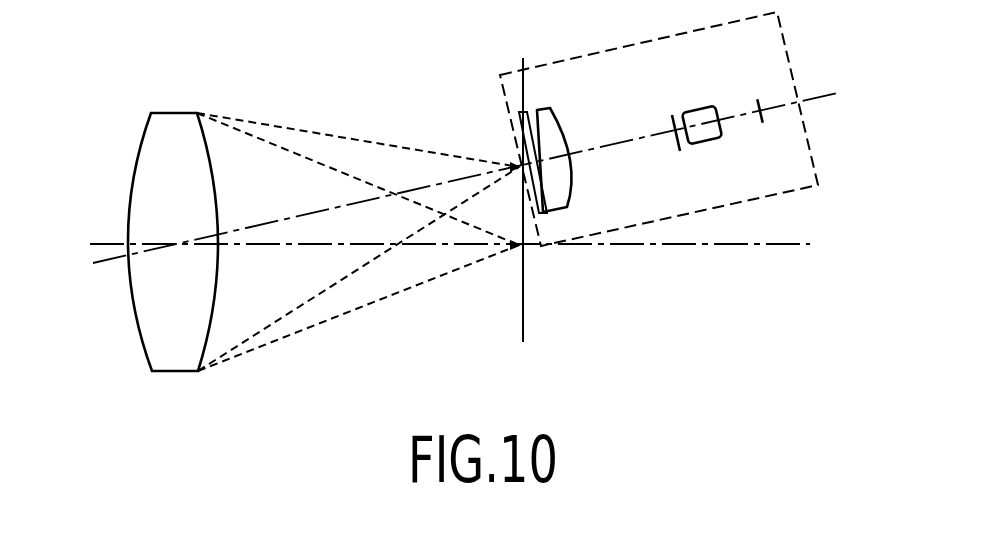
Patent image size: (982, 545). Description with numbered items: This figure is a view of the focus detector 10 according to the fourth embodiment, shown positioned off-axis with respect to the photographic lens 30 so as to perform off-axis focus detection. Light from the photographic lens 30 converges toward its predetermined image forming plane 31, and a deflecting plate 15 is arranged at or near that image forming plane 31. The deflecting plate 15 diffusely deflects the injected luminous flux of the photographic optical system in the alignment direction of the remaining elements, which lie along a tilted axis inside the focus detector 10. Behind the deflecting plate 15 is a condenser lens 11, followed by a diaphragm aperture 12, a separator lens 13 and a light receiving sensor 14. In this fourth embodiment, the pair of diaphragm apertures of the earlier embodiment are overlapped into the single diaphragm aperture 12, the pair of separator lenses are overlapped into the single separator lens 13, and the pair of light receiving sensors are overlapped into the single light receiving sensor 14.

The focus detector 10 is at (783, 192).
The condenser lens 11 is at (555, 110).
The diaphragm aperture 12 is at (680, 151).
The separator lens 13 is at (704, 107).
The light receiving sensor 14 is at (763, 124).
The deflecting plate 15 is at (547, 214).
The photographic lens 30 is at (167, 373).
The image forming plane 31 is at (523, 310).